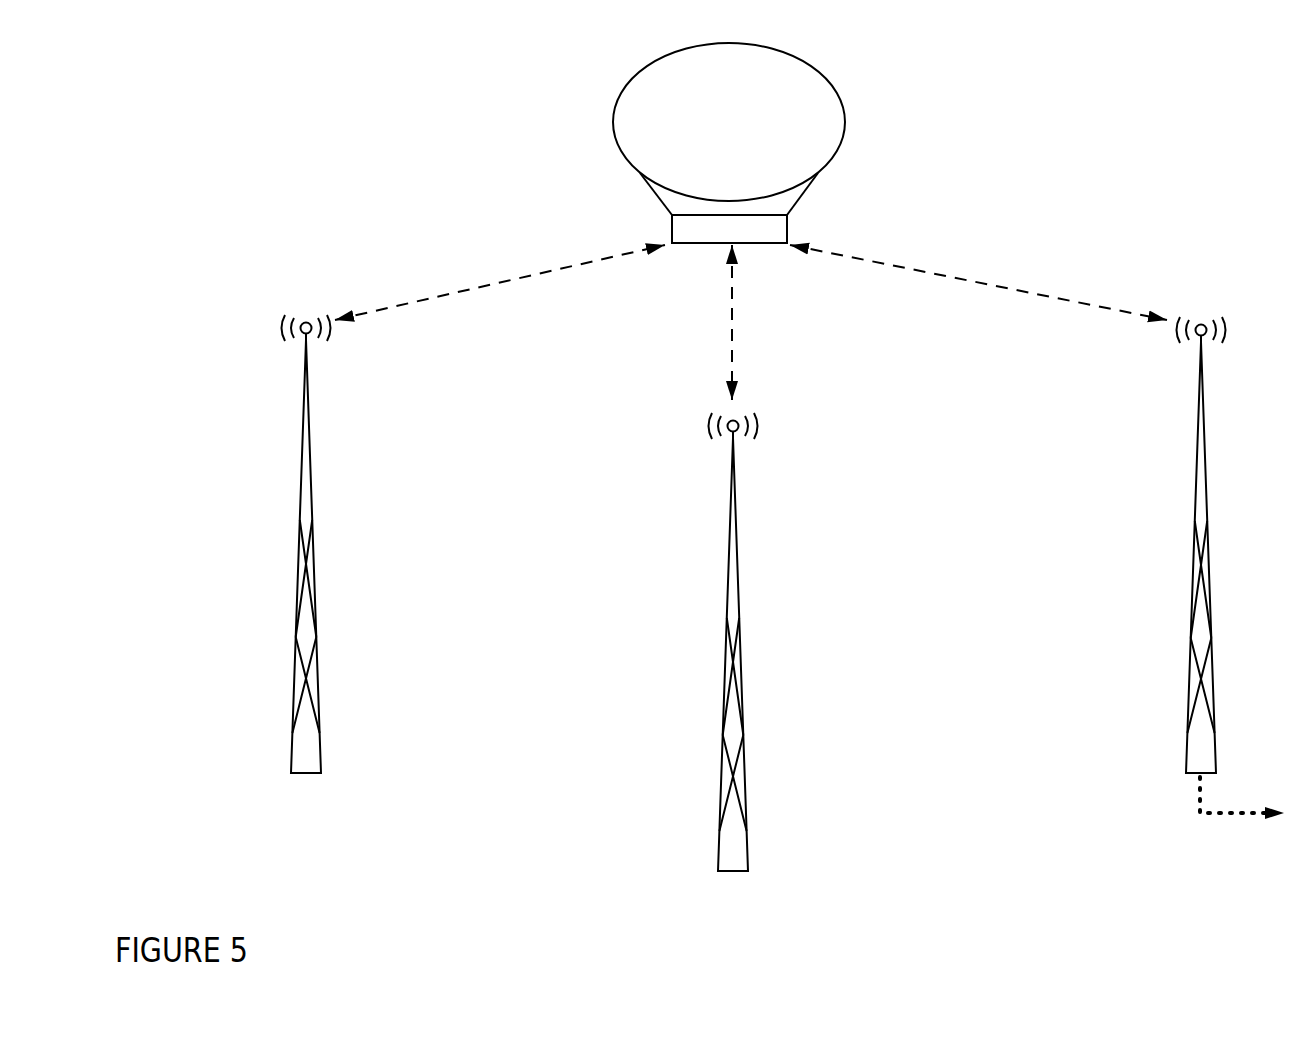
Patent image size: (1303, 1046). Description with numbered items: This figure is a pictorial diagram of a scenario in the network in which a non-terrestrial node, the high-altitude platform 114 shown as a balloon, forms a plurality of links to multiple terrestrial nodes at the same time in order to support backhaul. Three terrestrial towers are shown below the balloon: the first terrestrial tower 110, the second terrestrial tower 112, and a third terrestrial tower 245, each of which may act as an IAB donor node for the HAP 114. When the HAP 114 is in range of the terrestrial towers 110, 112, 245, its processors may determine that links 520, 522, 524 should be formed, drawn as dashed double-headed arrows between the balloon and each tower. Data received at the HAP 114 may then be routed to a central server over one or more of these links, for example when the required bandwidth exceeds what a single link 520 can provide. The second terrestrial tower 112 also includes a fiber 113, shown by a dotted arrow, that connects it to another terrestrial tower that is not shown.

The high-altitude platform 114 is at (710, 142).
The first terrestrial tower 110 is at (279, 544).
The second terrestrial tower 112 is at (1223, 545).
The terrestrial tower 245 is at (757, 642).
The link 520 is at (500, 282).
The link 522 is at (978, 282).
The link 524 is at (763, 322).
The fiber 113 is at (1242, 815).